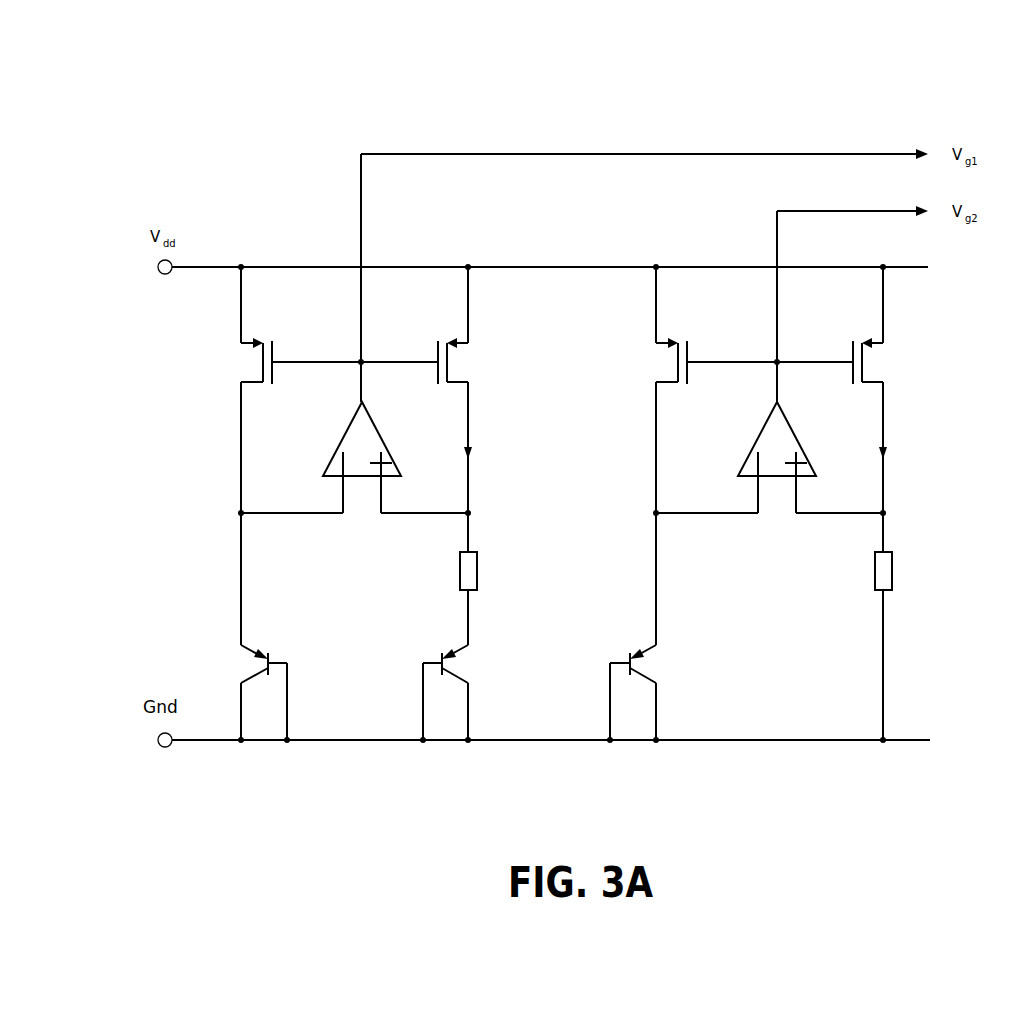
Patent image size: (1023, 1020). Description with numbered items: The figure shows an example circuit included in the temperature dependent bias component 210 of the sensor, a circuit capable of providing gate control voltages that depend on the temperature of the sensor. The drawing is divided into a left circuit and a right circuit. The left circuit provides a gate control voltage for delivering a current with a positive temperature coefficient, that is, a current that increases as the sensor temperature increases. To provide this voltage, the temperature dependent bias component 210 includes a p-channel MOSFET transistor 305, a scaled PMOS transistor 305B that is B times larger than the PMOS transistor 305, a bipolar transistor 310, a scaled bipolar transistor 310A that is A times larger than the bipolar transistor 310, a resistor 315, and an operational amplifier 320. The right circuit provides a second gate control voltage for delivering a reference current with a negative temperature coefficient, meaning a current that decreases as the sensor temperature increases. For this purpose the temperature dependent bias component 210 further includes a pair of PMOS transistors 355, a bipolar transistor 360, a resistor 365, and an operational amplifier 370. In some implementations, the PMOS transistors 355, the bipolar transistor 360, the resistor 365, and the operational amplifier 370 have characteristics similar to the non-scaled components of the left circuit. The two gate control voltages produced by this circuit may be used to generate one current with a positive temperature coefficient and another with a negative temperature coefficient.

The temperature dependent bias component 210 is at (108, 55).
The scaled PMOS transistor 305B is at (227, 390).
The PMOS transistor 305 is at (474, 390).
The operational amplifier 320 is at (354, 457).
The resistor 315 is at (437, 579).
The bipolar transistor 310 is at (235, 626).
The scaled bipolar transistor 310A is at (475, 692).
The pair of PMOS transistors 355 is at (768, 390).
The operational amplifier 370 is at (769, 457).
The resistor 365 is at (851, 626).
The bipolar transistor 360 is at (662, 626).